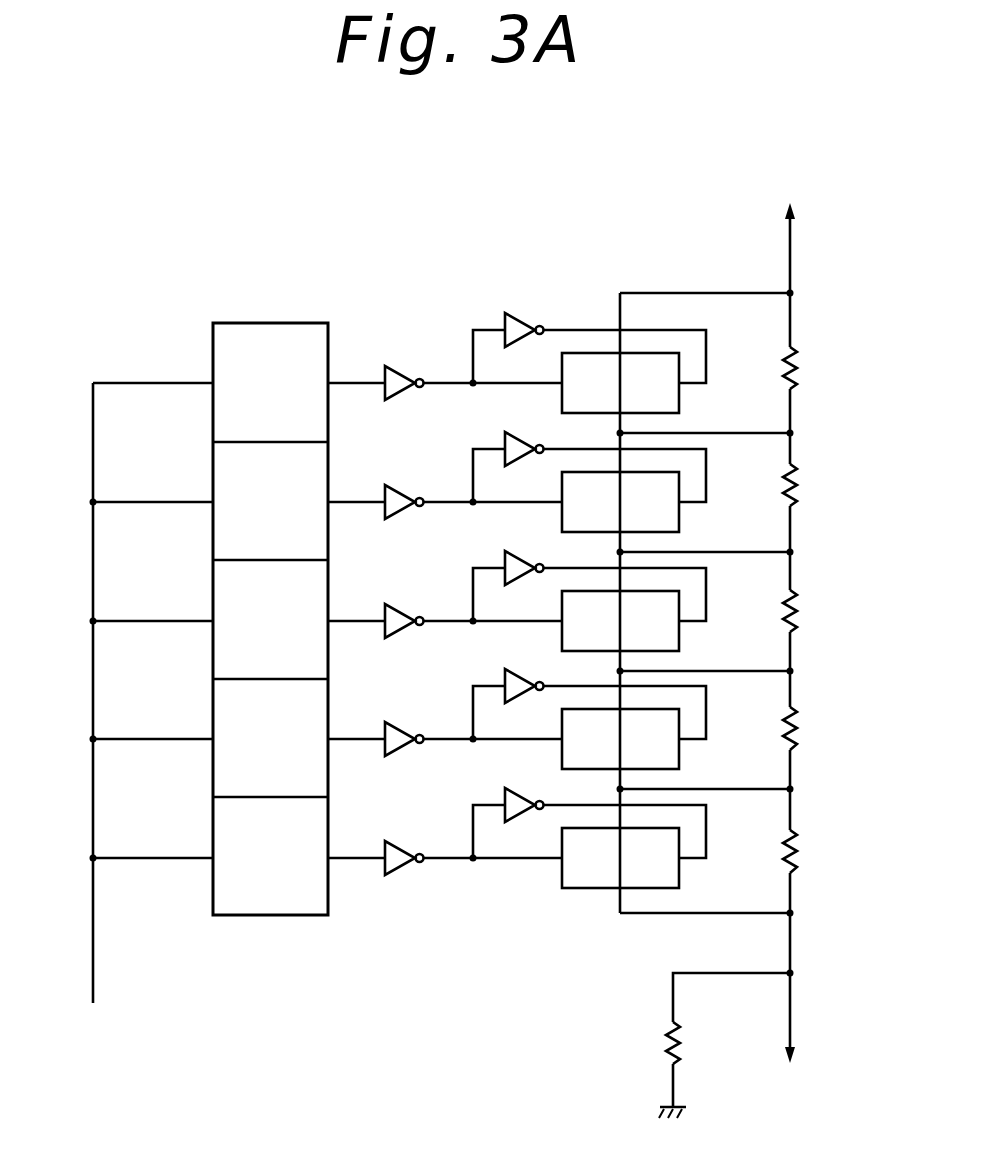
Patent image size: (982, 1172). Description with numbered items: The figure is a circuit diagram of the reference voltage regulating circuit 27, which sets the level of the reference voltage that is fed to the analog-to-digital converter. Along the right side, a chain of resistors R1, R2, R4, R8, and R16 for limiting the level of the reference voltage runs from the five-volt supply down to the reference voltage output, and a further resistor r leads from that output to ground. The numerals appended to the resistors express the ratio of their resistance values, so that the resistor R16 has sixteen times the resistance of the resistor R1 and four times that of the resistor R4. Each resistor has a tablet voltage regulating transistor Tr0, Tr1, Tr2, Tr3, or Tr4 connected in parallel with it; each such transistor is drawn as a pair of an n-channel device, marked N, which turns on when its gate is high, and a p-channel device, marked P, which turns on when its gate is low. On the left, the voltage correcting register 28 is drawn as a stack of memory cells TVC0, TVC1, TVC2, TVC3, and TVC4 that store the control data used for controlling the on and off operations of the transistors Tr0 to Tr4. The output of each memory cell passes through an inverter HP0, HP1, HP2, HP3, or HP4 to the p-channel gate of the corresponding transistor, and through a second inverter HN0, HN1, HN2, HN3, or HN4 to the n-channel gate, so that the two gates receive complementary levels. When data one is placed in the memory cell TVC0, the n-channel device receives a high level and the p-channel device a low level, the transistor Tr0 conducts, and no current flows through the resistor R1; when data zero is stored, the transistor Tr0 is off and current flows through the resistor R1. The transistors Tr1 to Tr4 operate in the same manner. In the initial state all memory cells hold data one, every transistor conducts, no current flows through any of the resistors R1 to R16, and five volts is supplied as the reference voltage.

The reference voltage regulating circuit 27 is at (375, 247).
The voltage correcting register 28 is at (270, 916).
The memory cell TVC0 is at (213, 355).
The memory cell TVC1 is at (213, 474).
The memory cell TVC2 is at (213, 593).
The memory cell TVC3 is at (213, 711).
The memory cell TVC4 is at (213, 830).
The inverter HP0 is at (395, 378).
The inverter HP1 is at (395, 497).
The inverter HP2 is at (395, 616).
The inverter HP3 is at (395, 734).
The inverter HP4 is at (395, 853).
The inverter HN0 is at (513, 326).
The inverter HN1 is at (513, 445).
The inverter HN2 is at (513, 564).
The inverter HN3 is at (513, 682).
The inverter HN4 is at (513, 801).
The tablet voltage regulating transistor Tr0 is at (676, 407).
The tablet voltage regulating transistor Tr1 is at (676, 526).
The tablet voltage regulating transistor Tr2 is at (676, 645).
The tablet voltage regulating transistor Tr3 is at (676, 763).
The tablet voltage regulating transistor Tr4 is at (676, 882).
The resistor R1 is at (799, 374).
The resistor R2 is at (799, 491).
The resistor R4 is at (799, 617).
The resistor R8 is at (799, 735).
The resistor R16 is at (799, 856).
The resistor r is at (682, 1047).